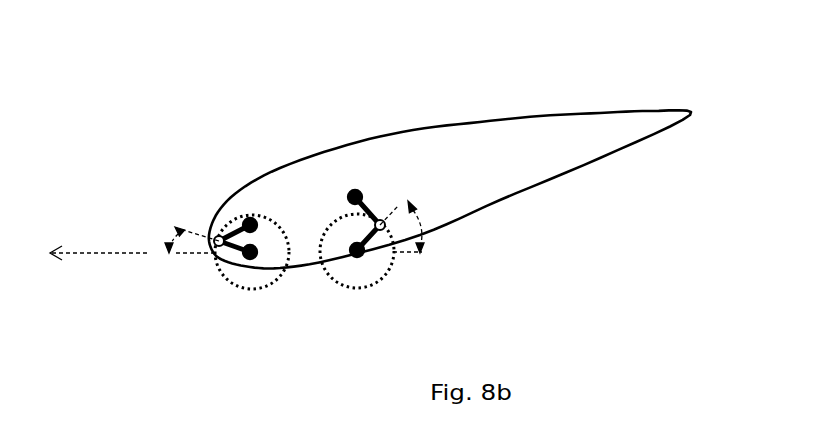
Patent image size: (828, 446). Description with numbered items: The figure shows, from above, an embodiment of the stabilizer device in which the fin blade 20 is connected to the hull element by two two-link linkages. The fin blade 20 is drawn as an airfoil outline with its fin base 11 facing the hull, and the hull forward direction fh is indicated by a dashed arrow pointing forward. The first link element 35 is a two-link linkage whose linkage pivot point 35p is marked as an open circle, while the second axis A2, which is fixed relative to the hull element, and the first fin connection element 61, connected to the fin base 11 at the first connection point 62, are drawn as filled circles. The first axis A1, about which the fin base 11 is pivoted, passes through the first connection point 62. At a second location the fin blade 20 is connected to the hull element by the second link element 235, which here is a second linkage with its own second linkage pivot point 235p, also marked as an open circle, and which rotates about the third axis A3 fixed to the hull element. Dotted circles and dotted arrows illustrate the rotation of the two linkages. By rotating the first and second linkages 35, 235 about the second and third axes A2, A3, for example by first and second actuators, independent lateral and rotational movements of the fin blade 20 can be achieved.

The fin base 11 is at (552, 142).
The fin blade 20 is at (450, 163).
The first link element 35 is at (250, 252).
The linkage pivot point 35p is at (219, 241).
The first fin connection element 61 is at (250, 225).
The first connection point 62 is at (250, 225).
The second link element 235 is at (357, 250).
The second linkage pivot point 235p is at (380, 225).
The first axis A1 is at (355, 197).
The second axis A2 is at (250, 252).
The third axis A3 is at (357, 250).
The hull forward direction fh is at (98, 237).